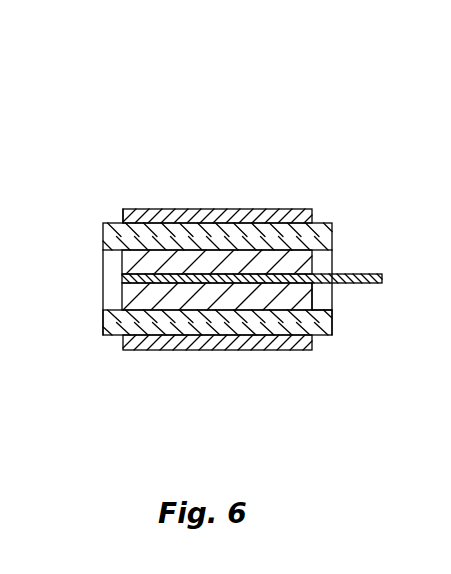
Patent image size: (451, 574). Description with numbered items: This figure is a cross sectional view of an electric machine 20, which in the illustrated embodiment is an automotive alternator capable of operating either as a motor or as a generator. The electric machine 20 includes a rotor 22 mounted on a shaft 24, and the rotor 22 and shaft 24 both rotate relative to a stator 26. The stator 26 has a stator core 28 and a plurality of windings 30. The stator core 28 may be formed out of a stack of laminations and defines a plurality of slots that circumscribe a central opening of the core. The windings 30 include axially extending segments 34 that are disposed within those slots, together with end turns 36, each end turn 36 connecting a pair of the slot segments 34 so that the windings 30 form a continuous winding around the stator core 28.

The electric machine 20 is at (57, 97).
The rotor 22 is at (127, 266).
The shaft 24 is at (368, 284).
The stator 26 is at (123, 221).
The stator core 28 is at (176, 216).
The windings 30 is at (270, 236).
The axially extending segments 34 is at (201, 328).
The end turns 36 is at (327, 299).